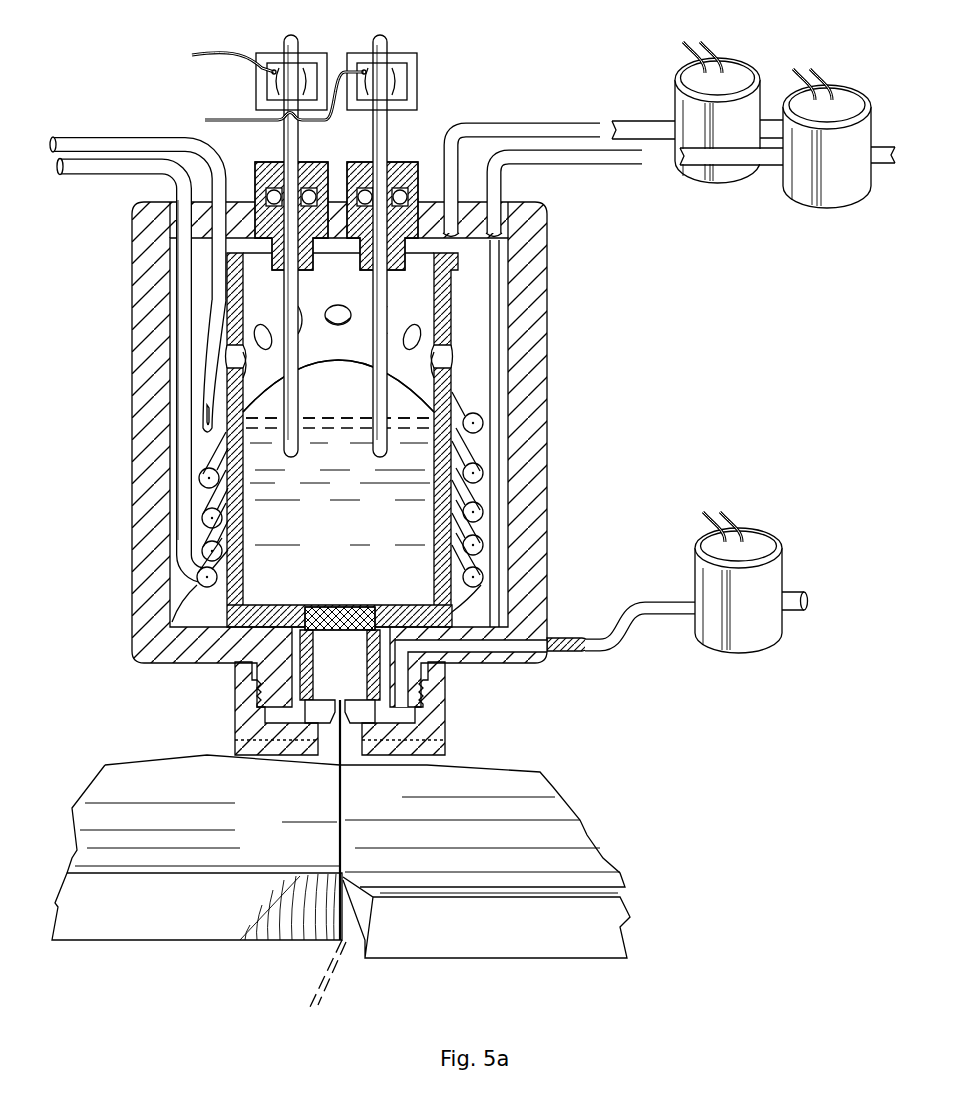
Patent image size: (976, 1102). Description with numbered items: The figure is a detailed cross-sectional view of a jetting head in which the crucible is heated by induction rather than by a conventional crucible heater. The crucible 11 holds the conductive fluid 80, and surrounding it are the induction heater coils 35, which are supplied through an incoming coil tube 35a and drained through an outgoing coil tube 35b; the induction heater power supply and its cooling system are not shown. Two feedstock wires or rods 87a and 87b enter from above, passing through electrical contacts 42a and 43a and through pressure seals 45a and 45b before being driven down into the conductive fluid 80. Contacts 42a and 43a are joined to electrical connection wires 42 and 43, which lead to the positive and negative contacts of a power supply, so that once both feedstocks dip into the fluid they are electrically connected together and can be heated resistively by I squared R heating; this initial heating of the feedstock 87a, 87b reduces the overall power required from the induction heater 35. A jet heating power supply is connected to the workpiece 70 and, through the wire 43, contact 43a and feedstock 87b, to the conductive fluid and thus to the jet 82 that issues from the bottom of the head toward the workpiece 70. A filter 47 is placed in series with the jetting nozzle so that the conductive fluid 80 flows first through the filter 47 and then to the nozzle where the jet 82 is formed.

The crucible 11 is at (437, 520).
The induction heater coils 35 is at (486, 470).
The incoming coil tube 35a is at (90, 176).
The outgoing coil tube 35b is at (95, 135).
The electrical connection wire 42 is at (204, 117).
The electrical contact 42a is at (418, 88).
The electrical connection wire 43 is at (207, 52).
The electrical contact 43a is at (270, 88).
The pressure seal 45a is at (405, 164).
The pressure seal 45b is at (258, 165).
The filter 47 is at (352, 605).
The workpiece 70 is at (147, 920).
The conductive fluid 80 is at (352, 537).
The jet 82 is at (345, 782).
The feedstock wire 87a is at (363, 374).
The feedstock wire 87b is at (305, 406).